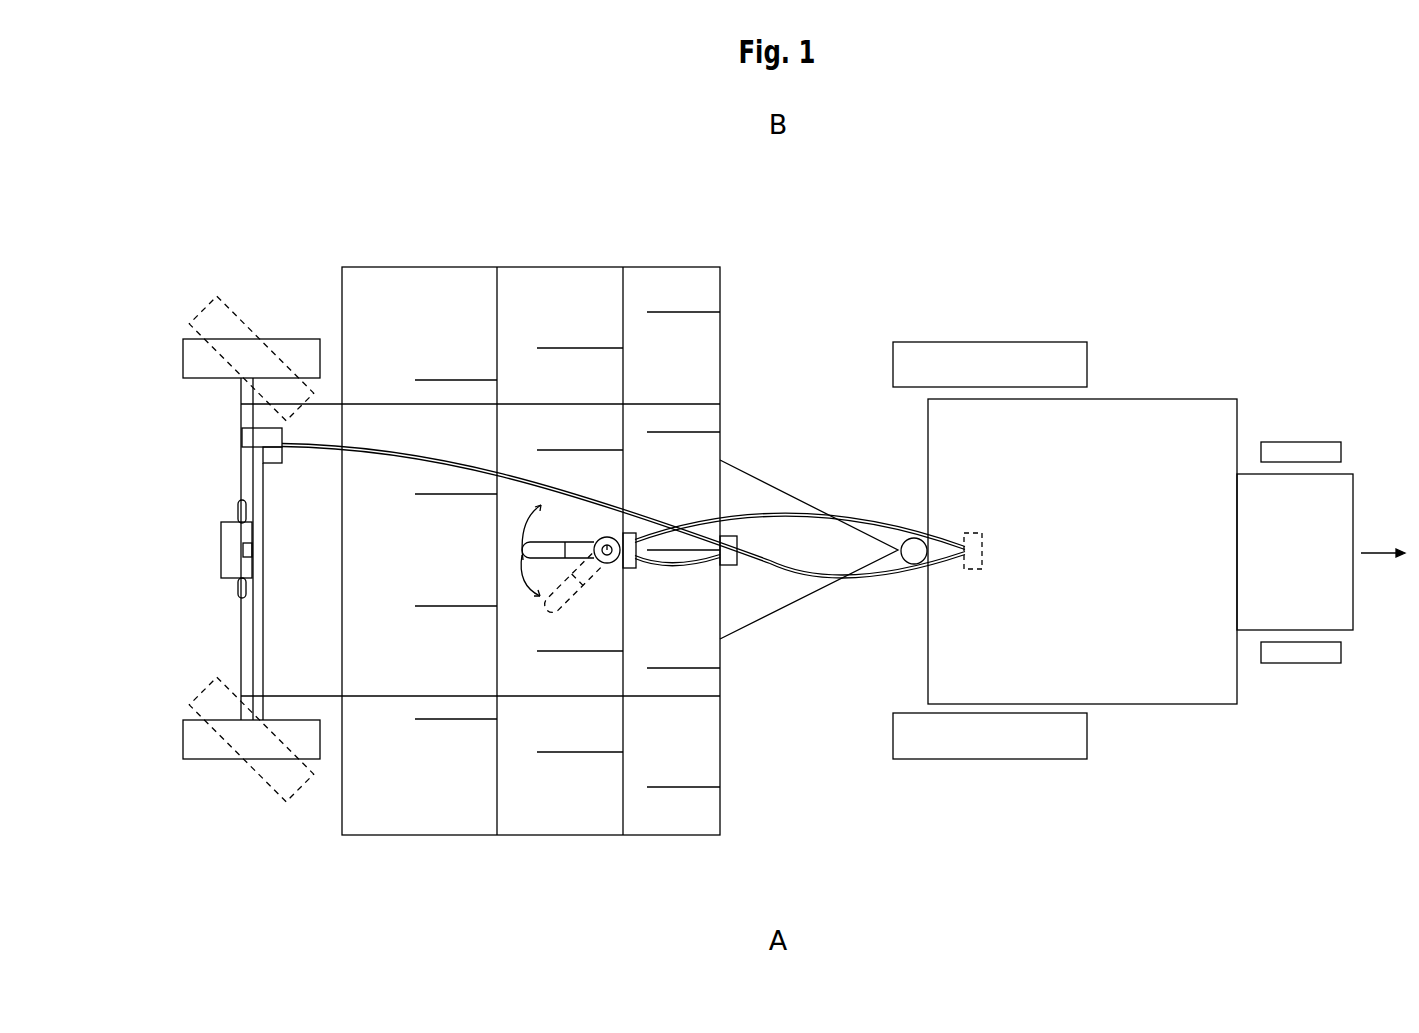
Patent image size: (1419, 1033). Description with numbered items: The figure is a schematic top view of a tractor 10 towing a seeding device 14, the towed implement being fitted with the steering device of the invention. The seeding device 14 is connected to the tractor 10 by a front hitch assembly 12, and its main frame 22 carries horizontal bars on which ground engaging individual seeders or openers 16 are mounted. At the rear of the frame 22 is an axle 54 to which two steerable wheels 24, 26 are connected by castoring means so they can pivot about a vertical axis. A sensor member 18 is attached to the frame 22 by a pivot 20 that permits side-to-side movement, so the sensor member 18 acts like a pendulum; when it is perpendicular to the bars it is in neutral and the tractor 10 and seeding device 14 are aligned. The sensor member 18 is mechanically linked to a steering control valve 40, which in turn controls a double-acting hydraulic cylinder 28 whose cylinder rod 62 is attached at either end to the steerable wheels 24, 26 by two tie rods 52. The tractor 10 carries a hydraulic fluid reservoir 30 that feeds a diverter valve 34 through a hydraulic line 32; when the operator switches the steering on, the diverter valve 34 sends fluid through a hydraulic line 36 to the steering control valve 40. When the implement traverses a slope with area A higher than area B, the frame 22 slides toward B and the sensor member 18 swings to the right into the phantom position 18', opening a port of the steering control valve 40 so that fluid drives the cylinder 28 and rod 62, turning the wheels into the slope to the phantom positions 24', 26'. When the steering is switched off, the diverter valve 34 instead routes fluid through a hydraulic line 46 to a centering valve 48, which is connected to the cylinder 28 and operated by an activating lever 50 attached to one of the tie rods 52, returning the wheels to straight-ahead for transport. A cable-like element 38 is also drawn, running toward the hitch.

The tractor 10 is at (1244, 383).
The front hitch assembly 12 is at (827, 586).
The seeding device 14 is at (727, 255).
The openers 16 is at (690, 311).
The sensor member 18 is at (557, 698).
The sensor member (pivoted position) 18' is at (572, 722).
The pivot 20 is at (605, 536).
The main frame 22 is at (470, 267).
The steerable wheel 24 is at (223, 358).
The steerable wheel (turned position) 24' is at (226, 358).
The steerable wheel 26 is at (223, 739).
The steerable wheel (turned position) 26' is at (251, 740).
The double-acting hydraulic cylinder 28 is at (221, 553).
The hydraulic fluid reservoir 30 is at (982, 553).
The hydraulic line 32 is at (878, 580).
The diverter valve 34 is at (738, 568).
The hydraulic line 36 is at (680, 566).
The steering cable 38 is at (873, 520).
The steering control valve 40 is at (632, 533).
The hydraulic line 46 is at (398, 450).
The centering valve 48 is at (280, 430).
The activating lever 50 is at (242, 438).
The tie rods 52 is at (241, 469).
The axle 54 is at (263, 655).
The cylinder rod 62 is at (238, 515).